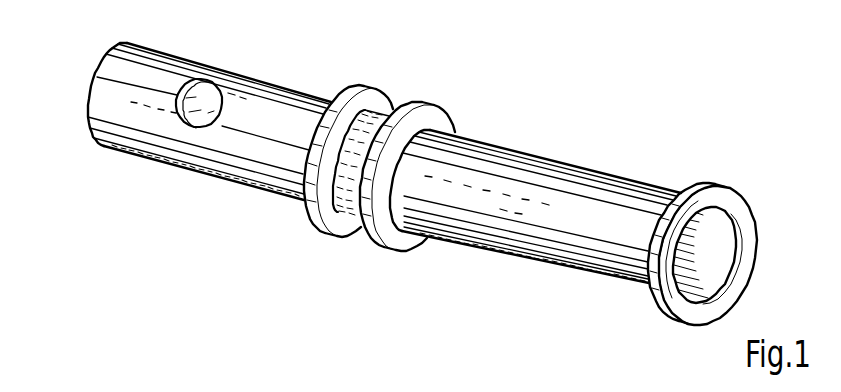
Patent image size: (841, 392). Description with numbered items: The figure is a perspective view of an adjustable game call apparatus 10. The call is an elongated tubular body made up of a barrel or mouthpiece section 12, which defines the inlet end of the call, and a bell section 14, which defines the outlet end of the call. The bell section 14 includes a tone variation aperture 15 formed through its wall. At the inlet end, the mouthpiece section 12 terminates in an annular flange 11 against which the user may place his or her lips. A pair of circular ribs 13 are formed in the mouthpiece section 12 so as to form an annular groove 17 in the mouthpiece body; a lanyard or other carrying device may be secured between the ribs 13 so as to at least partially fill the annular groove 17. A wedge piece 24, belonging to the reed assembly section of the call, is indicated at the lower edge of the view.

The game call apparatus 10 is at (422, 182).
The annular flange 11 is at (708, 193).
The barrel or mouthpiece section 12 is at (551, 158).
The circular ribs 13 is at (416, 112).
The bell section 14 is at (261, 80).
The tone variation aperture 15 is at (178, 95).
The annular groove 17 is at (343, 198).
The wedge piece 24 is at (310, 391).